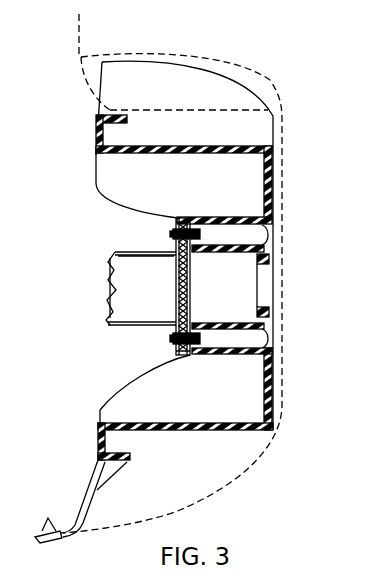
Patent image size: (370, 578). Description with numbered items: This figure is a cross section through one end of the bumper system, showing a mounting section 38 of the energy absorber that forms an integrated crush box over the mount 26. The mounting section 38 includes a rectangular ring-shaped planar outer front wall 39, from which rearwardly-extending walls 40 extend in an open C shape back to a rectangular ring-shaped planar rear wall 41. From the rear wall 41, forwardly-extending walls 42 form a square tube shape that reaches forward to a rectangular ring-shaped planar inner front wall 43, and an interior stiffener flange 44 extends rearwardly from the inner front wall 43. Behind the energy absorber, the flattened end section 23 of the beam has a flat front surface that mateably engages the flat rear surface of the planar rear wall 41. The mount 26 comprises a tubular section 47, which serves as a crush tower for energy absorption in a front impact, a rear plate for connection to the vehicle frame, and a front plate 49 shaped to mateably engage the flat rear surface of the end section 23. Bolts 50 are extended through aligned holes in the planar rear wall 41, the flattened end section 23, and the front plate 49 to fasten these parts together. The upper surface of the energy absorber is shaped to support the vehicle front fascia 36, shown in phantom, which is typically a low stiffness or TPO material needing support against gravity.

The flattened end section 23 is at (191, 280).
The mount 26 is at (100, 281).
The vehicle front fascia 36 is at (231, 68).
The mounting section 38 is at (206, 213).
The outer front wall 39 is at (268, 190).
The rearwardly-extending walls 40 is at (263, 221).
The rear wall 41 is at (192, 220).
The forwardly-extending walls 42 is at (268, 240).
The inner front wall 43 is at (265, 258).
The interior stiffener flange 44 is at (263, 308).
The tubular section 47 is at (124, 250).
The front plate 49 is at (177, 270).
The bolts 50 is at (174, 234).